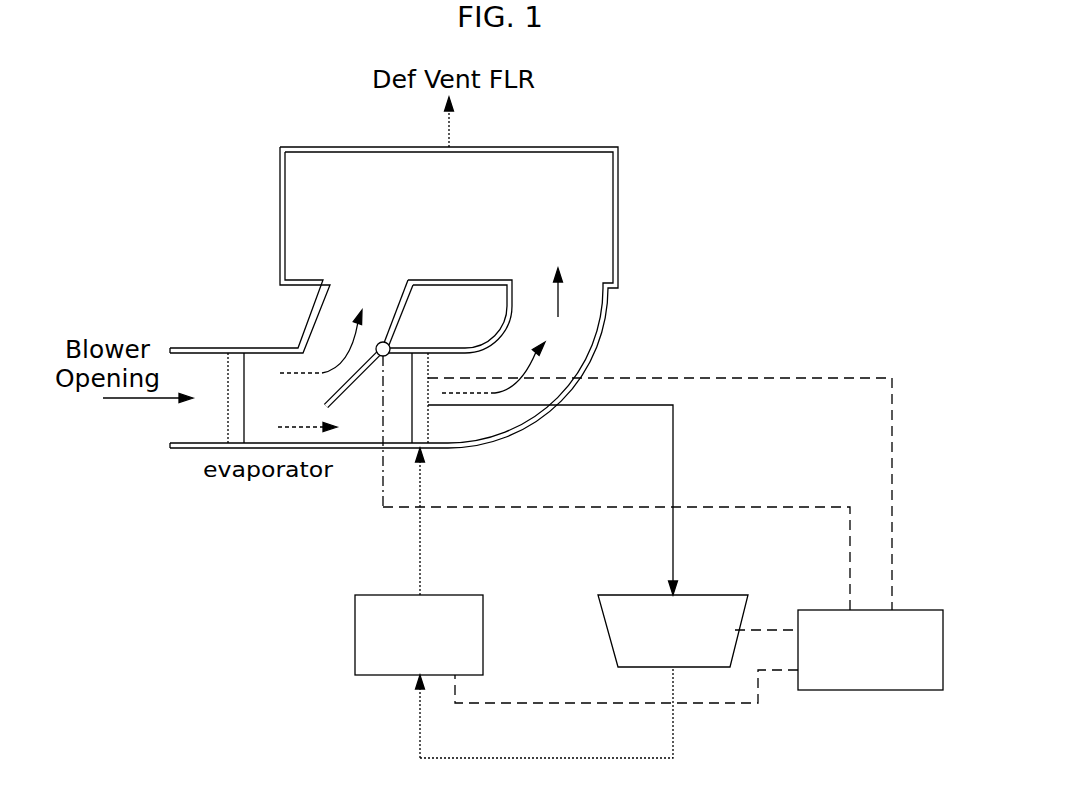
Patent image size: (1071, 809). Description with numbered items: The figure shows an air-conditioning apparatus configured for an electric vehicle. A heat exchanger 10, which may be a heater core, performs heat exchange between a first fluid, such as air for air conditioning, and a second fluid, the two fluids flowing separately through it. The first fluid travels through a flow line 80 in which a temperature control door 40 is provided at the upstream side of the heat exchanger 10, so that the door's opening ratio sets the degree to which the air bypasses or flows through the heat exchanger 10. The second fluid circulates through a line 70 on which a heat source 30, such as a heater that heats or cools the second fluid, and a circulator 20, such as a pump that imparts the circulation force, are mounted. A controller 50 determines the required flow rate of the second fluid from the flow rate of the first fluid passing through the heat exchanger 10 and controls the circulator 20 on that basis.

The heat exchanger 10 is at (417, 405).
The circulator 20 is at (600, 635).
The heat source 30 is at (355, 640).
The temperature control door 40 is at (363, 370).
The controller 50 is at (870, 690).
The line 70 is at (420, 537).
The flow line 80 is at (365, 412).